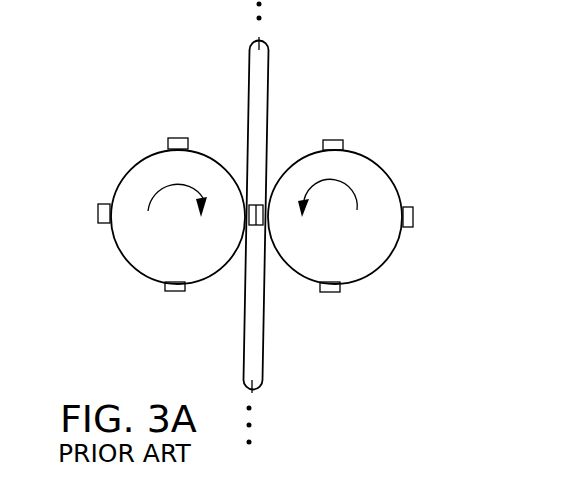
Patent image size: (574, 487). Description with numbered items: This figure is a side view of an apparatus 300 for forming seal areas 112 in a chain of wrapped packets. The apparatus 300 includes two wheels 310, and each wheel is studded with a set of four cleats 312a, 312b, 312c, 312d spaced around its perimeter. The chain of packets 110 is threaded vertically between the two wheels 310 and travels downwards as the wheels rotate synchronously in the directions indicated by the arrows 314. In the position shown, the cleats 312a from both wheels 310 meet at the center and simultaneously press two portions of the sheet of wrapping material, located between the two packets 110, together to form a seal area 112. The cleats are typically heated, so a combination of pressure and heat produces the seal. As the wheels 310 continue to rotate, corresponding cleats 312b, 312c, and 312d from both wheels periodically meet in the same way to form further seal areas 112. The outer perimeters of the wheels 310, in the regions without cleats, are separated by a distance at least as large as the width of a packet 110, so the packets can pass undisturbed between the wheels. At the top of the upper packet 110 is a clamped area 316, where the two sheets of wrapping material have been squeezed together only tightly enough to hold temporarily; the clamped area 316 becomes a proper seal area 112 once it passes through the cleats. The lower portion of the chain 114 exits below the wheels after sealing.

The apparatus 300 is at (111, 286).
The wheel 310 is at (128, 163).
The cleat 312a is at (248, 218).
The cleat 312b is at (178, 137).
The cleat 312c is at (98, 212).
The cleat 312d is at (177, 291).
The arrow 314 is at (180, 189).
The packet 110 is at (268, 82).
The seal area 112 is at (252, 387).
The rod segment 114 is at (248, 348).
The clamped area 316 is at (262, 42).